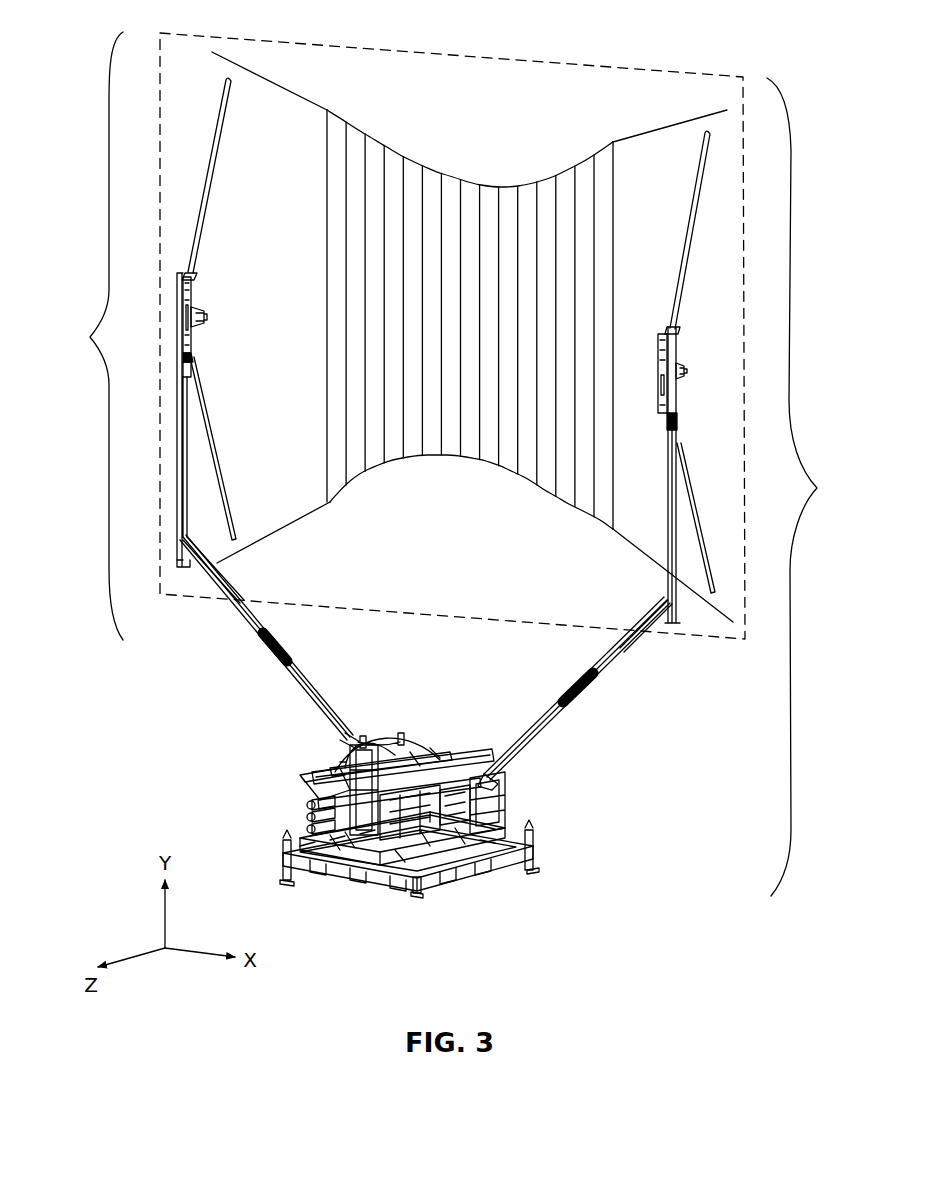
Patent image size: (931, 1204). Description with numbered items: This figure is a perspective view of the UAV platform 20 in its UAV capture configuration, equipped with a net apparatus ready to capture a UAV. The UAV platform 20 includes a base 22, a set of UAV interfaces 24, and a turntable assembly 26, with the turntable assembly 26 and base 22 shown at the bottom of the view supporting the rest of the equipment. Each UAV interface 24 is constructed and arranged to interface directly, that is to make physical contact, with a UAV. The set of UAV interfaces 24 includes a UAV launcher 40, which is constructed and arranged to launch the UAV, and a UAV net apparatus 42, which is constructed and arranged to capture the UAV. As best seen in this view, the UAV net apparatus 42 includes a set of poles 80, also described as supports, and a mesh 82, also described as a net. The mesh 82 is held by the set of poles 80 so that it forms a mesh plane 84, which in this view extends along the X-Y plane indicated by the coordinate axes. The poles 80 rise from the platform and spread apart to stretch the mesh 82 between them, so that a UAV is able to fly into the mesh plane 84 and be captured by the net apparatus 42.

The UAV platform 20 is at (808, 487).
The base 22 is at (267, 838).
The set of UAV interfaces 24 is at (456, 336).
The turntable assembly 26 is at (518, 811).
The UAV launcher 40 is at (396, 722).
The UAV net apparatus 42 is at (387, 342).
The set of poles 80 is at (237, 614).
The mesh 82 is at (462, 185).
The mesh plane 84 is at (745, 515).